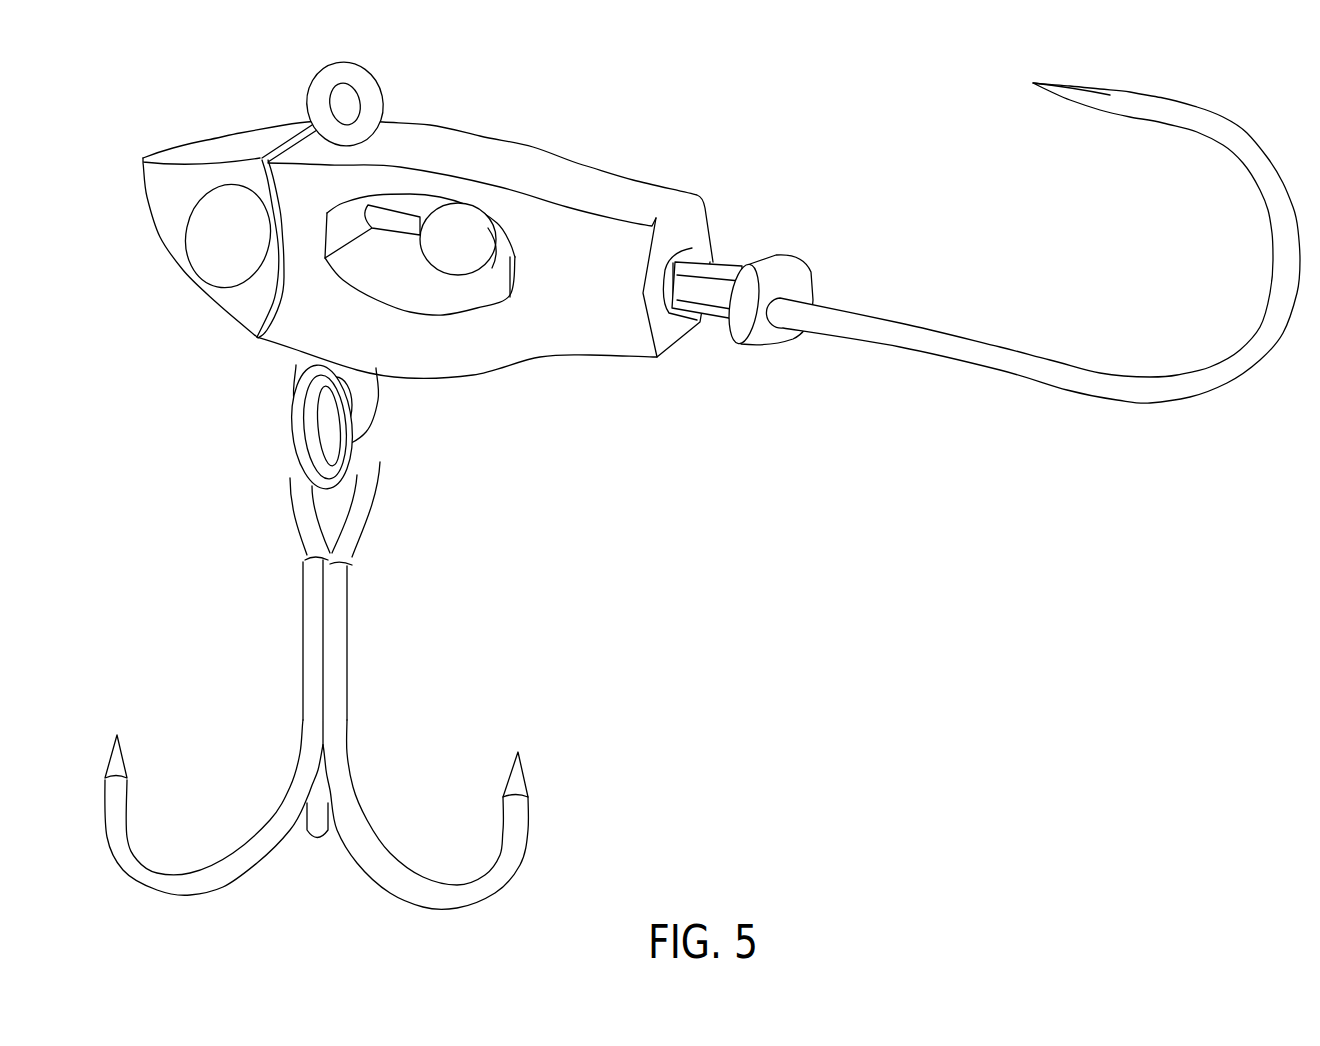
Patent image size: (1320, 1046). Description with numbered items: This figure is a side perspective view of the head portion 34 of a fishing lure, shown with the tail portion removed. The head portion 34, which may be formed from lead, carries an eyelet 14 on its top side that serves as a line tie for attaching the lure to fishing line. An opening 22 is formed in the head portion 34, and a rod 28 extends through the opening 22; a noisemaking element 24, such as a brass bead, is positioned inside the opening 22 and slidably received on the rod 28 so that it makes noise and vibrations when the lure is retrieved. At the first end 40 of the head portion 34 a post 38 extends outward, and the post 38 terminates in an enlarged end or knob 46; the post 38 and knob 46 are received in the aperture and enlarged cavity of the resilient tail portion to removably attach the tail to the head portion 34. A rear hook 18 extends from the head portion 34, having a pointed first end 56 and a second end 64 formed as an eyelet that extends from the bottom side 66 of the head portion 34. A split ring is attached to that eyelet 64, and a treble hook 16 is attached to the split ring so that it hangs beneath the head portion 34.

The eyelet 14 is at (363, 89).
The treble hook 16 is at (345, 675).
The rear hook 18 is at (1205, 115).
The opening 22 is at (428, 274).
The noisemaking element 24 is at (453, 222).
The rod 28 is at (407, 222).
The head portion 34 is at (190, 290).
The post 38 is at (728, 267).
The first end 40 is at (717, 187).
The knob 46 is at (760, 343).
The pointed first end 56 is at (1033, 83).
The second end 64 is at (372, 400).
The bottom side 66 is at (293, 437).